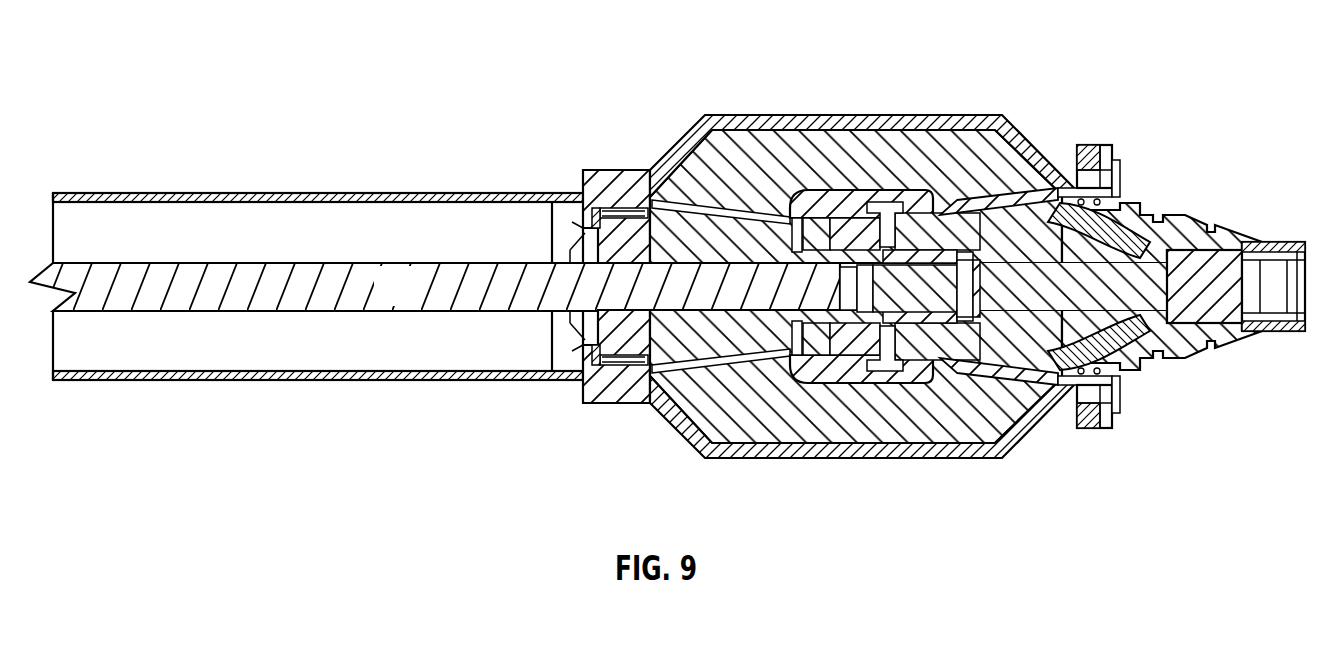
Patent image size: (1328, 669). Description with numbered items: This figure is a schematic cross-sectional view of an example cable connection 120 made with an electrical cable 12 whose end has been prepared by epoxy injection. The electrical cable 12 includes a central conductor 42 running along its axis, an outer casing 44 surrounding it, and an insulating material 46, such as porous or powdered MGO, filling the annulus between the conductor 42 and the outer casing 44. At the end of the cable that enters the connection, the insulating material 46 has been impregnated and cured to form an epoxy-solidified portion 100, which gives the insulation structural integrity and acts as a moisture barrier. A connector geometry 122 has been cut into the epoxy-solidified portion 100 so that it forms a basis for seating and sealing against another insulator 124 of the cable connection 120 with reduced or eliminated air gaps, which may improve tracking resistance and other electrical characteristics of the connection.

The electrical cable 12 is at (318, 251).
The outer casing 44 is at (207, 197).
The insulating material 46 is at (410, 247).
The conductor 42 is at (410, 300).
The epoxy-solidified portion 100 is at (568, 220).
The cable connection 120 is at (852, 97).
The connector geometry 122 is at (578, 342).
The insulator 124 is at (593, 315).